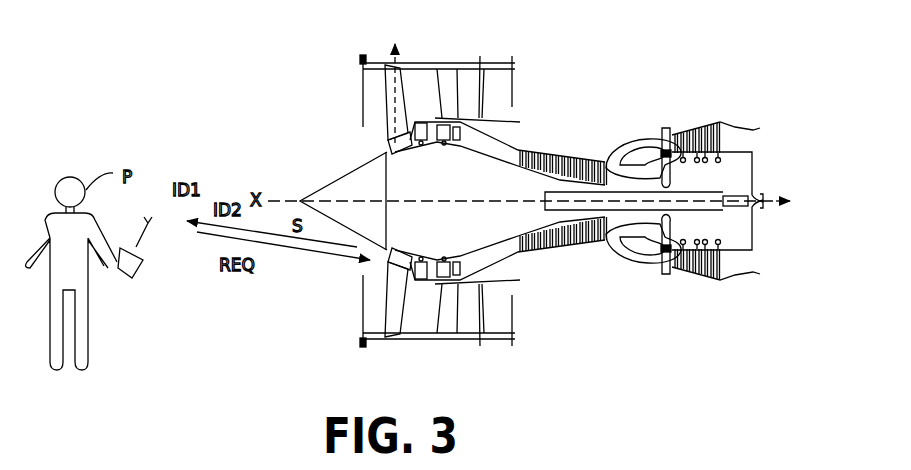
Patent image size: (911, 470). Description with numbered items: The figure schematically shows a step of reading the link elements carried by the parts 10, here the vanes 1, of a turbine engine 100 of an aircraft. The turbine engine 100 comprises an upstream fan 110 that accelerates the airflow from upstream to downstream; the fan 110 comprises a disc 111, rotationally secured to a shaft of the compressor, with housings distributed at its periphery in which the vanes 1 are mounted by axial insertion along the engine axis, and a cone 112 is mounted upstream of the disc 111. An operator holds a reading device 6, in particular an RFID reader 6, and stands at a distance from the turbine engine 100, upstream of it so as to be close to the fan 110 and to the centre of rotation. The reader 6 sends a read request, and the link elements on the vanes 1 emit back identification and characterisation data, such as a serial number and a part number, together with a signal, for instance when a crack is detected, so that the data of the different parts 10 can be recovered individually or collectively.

The vane 1 is at (385, 87).
The reading device 6 is at (143, 268).
The part 10 is at (360, 56).
The turbine engine 100 is at (484, 182).
The fan 110 is at (362, 182).
The disc 111 is at (393, 173).
The cone 112 is at (330, 182).